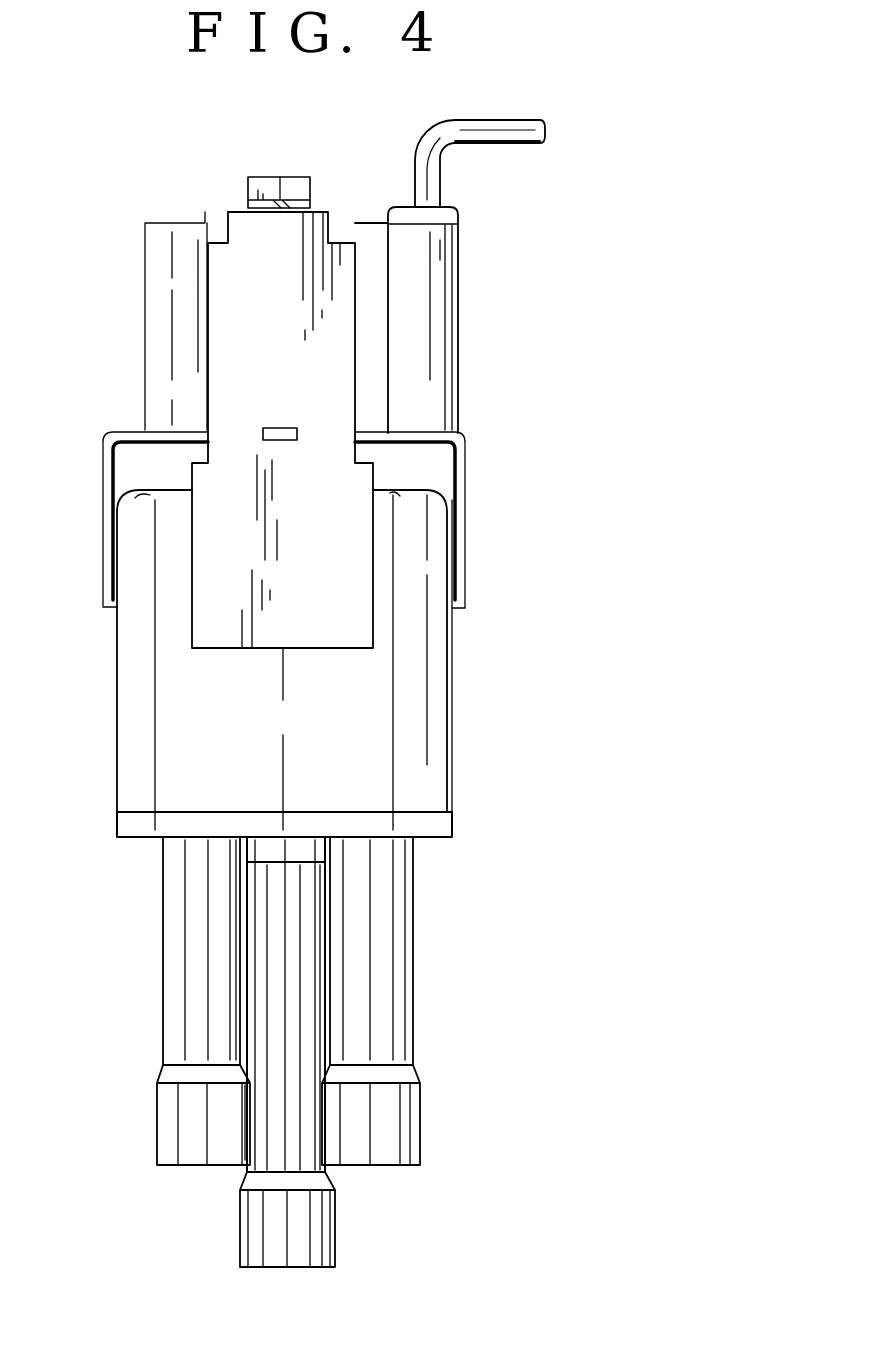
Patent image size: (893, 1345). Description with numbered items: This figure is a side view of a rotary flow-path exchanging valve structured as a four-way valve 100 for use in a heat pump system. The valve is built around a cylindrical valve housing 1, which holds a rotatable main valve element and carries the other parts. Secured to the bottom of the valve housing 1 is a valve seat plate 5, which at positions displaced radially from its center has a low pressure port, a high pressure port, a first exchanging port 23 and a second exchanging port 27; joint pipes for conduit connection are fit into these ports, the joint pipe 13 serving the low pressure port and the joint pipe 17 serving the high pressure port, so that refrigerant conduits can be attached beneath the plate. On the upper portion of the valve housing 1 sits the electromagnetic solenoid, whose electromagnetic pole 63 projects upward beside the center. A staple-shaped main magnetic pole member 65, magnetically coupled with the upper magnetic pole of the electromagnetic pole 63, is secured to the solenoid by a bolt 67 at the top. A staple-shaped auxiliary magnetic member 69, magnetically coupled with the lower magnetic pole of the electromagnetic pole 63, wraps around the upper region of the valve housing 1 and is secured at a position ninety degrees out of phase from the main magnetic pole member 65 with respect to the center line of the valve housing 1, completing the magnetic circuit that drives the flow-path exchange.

The four-way valve 100 is at (477, 567).
The bolt 67 is at (283, 177).
The main magnetic pole member 65 is at (340, 517).
The electromagnetic pole 63 is at (425, 345).
The auxiliary magnetic member 69 is at (457, 593).
The valve housing 1 is at (432, 726).
The valve seat plate 5 is at (435, 832).
The first exchanging port 23 is at (175, 962).
The second exchanging port 27 is at (393, 928).
The joint pipe 17 is at (307, 1022).
The joint pipe 13 is at (337, 1233).